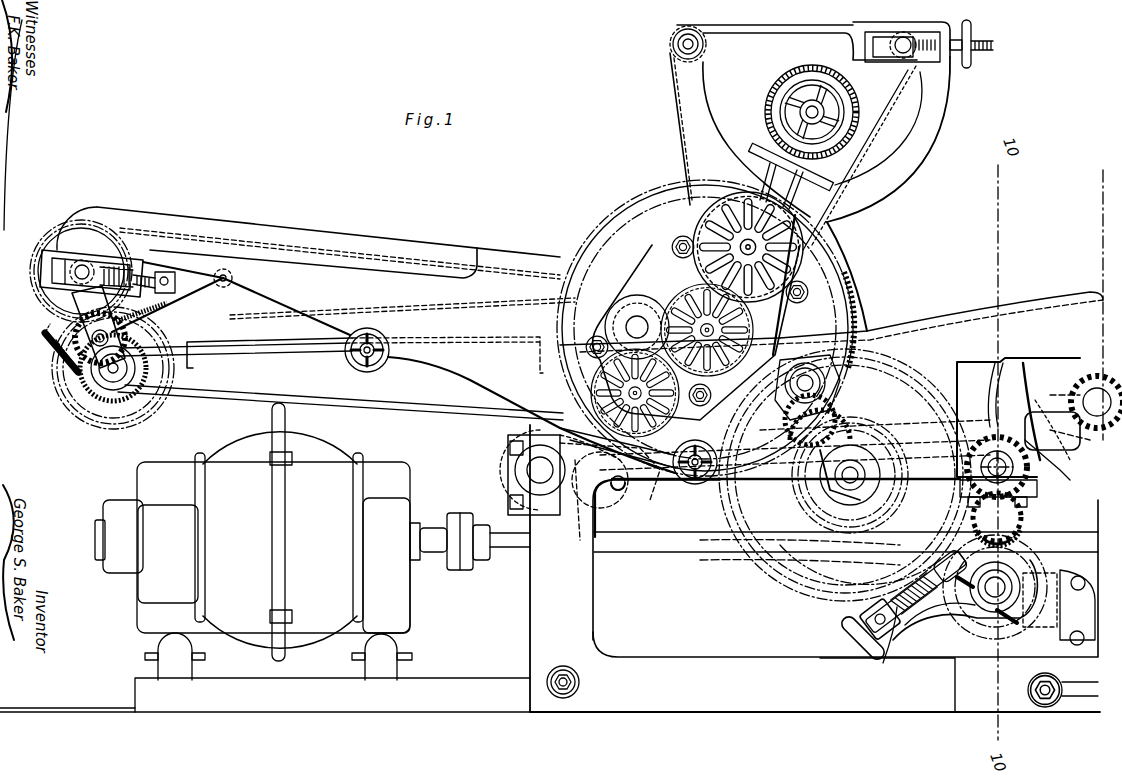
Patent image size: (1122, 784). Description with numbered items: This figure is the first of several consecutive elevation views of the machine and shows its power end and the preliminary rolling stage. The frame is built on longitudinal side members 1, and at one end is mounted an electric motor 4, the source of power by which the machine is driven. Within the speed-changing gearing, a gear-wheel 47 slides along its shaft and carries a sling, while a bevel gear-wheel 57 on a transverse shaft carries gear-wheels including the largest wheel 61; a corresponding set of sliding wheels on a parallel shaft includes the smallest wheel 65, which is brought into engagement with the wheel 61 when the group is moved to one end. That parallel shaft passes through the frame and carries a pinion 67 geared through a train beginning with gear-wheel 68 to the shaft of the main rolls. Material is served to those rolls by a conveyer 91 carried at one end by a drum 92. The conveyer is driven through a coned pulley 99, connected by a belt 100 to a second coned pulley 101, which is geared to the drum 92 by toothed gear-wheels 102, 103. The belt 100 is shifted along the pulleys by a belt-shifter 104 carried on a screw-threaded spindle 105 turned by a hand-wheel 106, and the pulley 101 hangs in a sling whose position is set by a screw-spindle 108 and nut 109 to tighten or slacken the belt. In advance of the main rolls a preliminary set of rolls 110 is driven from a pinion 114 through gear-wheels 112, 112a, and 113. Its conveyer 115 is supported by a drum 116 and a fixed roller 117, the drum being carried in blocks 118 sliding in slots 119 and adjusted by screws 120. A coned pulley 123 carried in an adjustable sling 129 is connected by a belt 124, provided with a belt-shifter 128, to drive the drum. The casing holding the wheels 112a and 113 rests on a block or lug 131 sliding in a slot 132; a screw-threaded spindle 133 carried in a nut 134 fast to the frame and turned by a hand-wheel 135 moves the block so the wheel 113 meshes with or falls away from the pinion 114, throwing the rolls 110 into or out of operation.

The longitudinal side member 1 is at (393, 439).
The electric motor 4 is at (312, 557).
The gear-wheel 47 is at (1050, 676).
The bevel gear-wheel 57 is at (985, 600).
The gear-wheel 61 is at (1040, 523).
The gear-wheel 65 is at (1045, 505).
The pinion 67 is at (1040, 470).
The gear-wheel 68 is at (1075, 398).
The conveyer 91 is at (968, 320).
The drum 92 is at (845, 400).
The coned pulley 99 is at (545, 510).
The belt 100 is at (580, 540).
The coned pulley 101 is at (880, 500).
The toothed gear-wheel 102 is at (780, 560).
The toothed gear-wheel 103 is at (790, 470).
The belt-shifter 104 is at (630, 492).
The screw-threaded spindle 105 is at (672, 490).
The hand-wheel 106 is at (705, 485).
The screw-spindle 108 is at (820, 495).
The nut 109 is at (735, 505).
The set of rolls 110 is at (832, 235).
The gear-wheel 112 is at (853, 273).
The gear-wheel 112a is at (860, 432).
The gear-wheel 113 is at (967, 362).
The pinion 114 is at (958, 460).
The conveyer 115 is at (190, 228).
The drum 116 is at (60, 228).
The roller 117 is at (655, 262).
The block 118 is at (105, 262).
The slot 119 is at (120, 272).
The screw 120 is at (215, 278).
The coned pulley 123 is at (92, 392).
The belt 124 is at (367, 374).
The belt-shifter 128 is at (245, 357).
The adjustable sling 129 is at (68, 312).
The block or lug 131 is at (870, 548).
The slot 132 is at (878, 598).
The screw-threaded spindle 133 is at (905, 635).
The nut 134 is at (893, 640).
The hand-wheel 135 is at (845, 632).